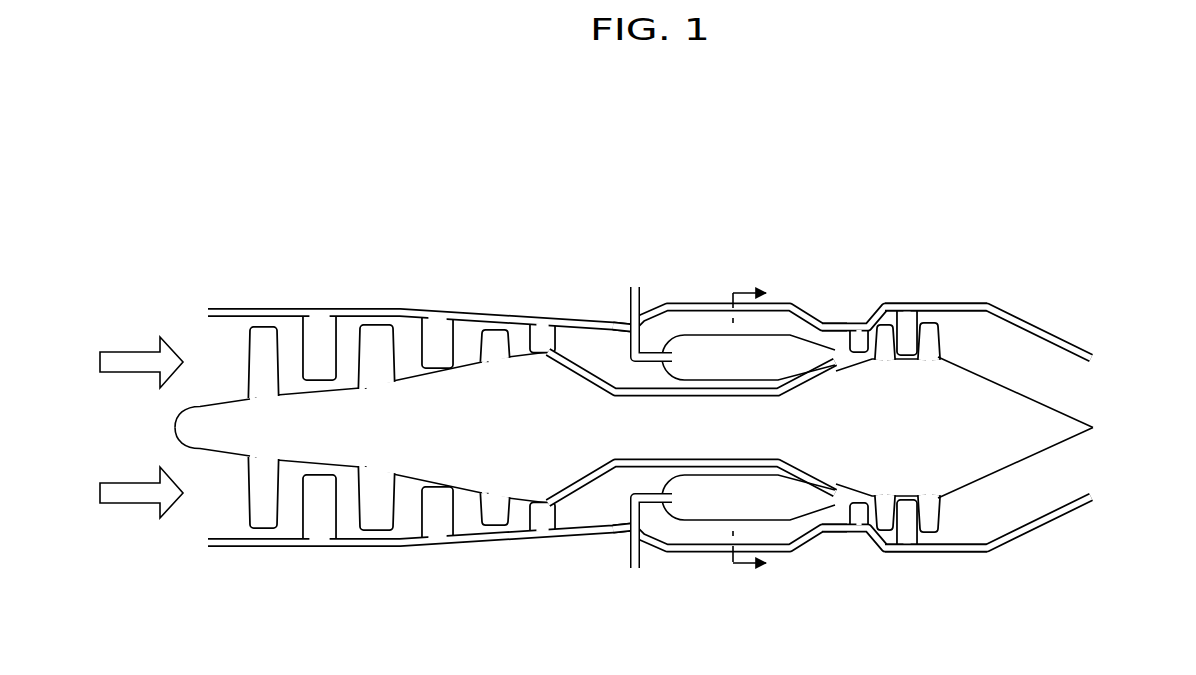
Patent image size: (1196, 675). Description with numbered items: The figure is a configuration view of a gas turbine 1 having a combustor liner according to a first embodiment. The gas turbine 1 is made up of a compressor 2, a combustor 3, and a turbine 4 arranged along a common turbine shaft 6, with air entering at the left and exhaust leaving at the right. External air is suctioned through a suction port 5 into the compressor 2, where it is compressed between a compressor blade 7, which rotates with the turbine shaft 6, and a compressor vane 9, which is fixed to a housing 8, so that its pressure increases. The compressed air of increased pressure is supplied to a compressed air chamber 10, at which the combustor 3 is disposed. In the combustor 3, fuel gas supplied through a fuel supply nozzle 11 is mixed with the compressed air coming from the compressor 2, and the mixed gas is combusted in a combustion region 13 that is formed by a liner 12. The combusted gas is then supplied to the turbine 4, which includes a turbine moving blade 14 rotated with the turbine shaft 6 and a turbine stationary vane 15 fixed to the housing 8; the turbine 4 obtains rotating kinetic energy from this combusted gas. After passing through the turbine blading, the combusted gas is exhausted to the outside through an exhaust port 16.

The gas turbine 1 is at (251, 235).
The compressor 2 is at (420, 377).
The combustor 3 is at (730, 407).
The turbine 4 is at (904, 365).
The suction port 5 is at (158, 428).
The turbine shaft 6 is at (623, 460).
The compressor blade 7 is at (317, 307).
The housing 8 is at (478, 311).
The compressor vane 9 is at (354, 383).
The compressed air chamber 10 is at (694, 312).
The fuel supply nozzle 11 is at (660, 351).
The liner 12 is at (764, 336).
The combustion region 13 is at (776, 354).
The turbine moving blade 14 is at (883, 329).
The turbine stationary vane 15 is at (915, 360).
The exhaust port 16 is at (1068, 385).